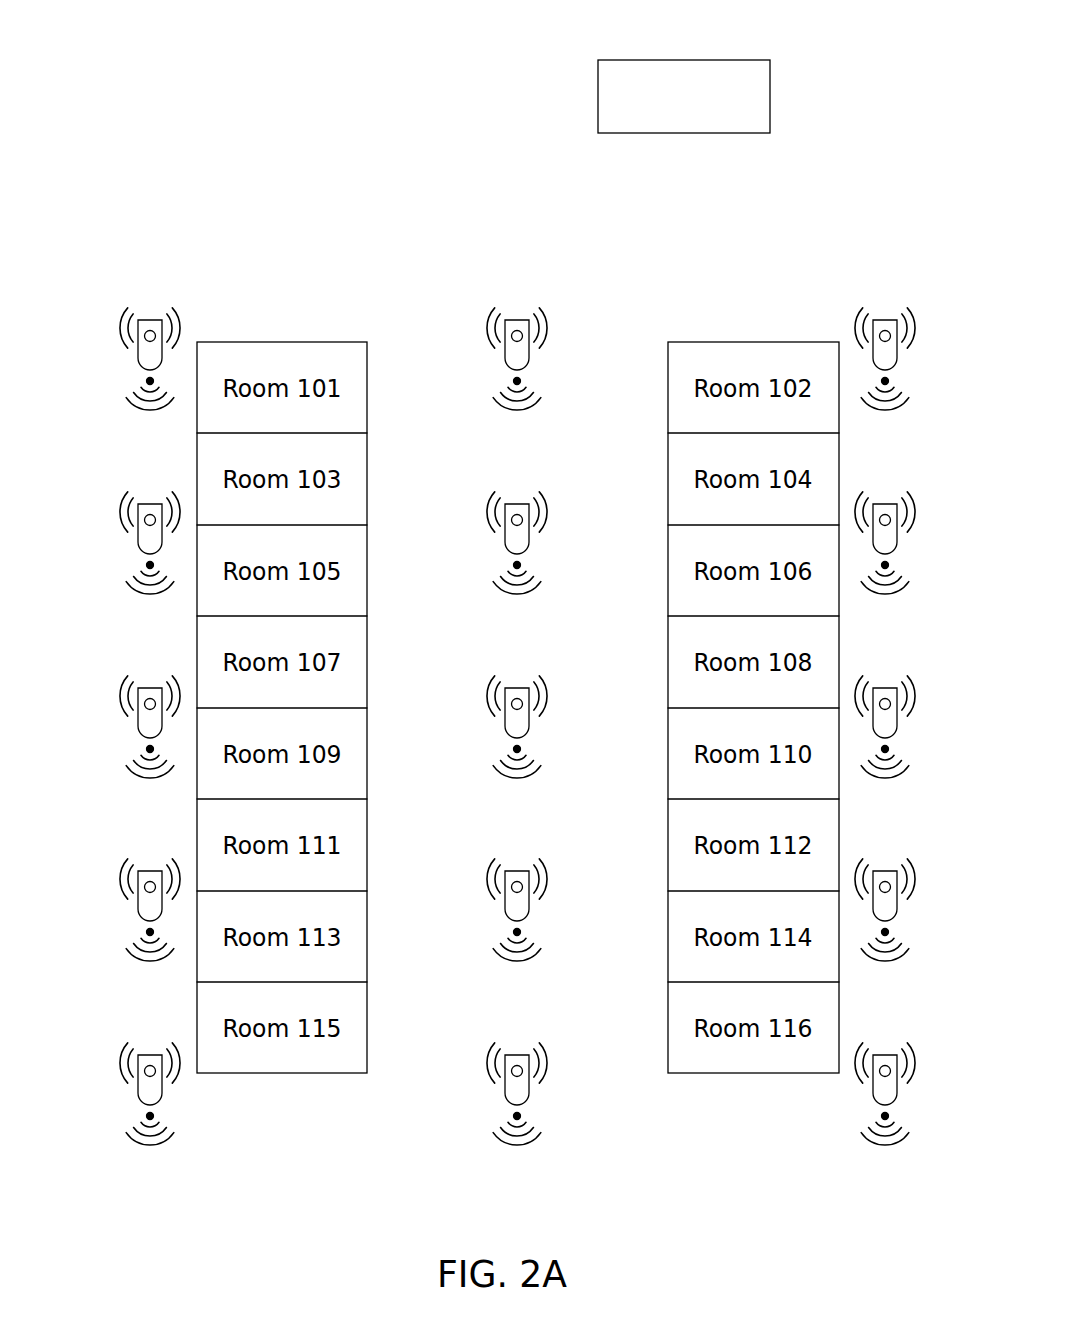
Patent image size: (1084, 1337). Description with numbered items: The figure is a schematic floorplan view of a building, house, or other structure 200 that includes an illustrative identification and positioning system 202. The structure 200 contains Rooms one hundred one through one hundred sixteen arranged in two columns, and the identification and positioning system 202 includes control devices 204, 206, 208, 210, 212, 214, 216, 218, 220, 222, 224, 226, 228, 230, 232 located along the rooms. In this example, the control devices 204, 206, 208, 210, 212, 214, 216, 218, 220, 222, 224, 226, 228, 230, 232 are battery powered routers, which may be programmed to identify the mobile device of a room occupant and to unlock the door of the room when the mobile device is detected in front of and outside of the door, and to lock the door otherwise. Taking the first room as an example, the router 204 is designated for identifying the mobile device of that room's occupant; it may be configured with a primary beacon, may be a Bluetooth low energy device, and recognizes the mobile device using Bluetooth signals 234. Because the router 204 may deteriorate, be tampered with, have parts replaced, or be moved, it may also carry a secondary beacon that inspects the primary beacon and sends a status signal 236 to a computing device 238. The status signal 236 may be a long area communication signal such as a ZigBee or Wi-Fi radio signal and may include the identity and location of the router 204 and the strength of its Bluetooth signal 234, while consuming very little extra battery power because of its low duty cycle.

The structure 200 is at (471, 247).
The identification and positioning system 202 is at (126, 245).
The router 204 is at (114, 364).
The control device 206 is at (138, 543).
The control device 208 is at (138, 727).
The control device 210 is at (138, 910).
The control device 212 is at (138, 1094).
The control device 214 is at (517, 320).
The control device 216 is at (517, 504).
The control device 218 is at (517, 688).
The control device 220 is at (517, 871).
The control device 222 is at (517, 1055).
The control device 224 is at (885, 320).
The control device 226 is at (885, 504).
The control device 228 is at (885, 688).
The control device 230 is at (885, 871).
The control device 232 is at (885, 1055).
The Bluetooth signals 234 is at (126, 316).
The status signal 236 is at (131, 413).
The computing device 238 is at (682, 60).